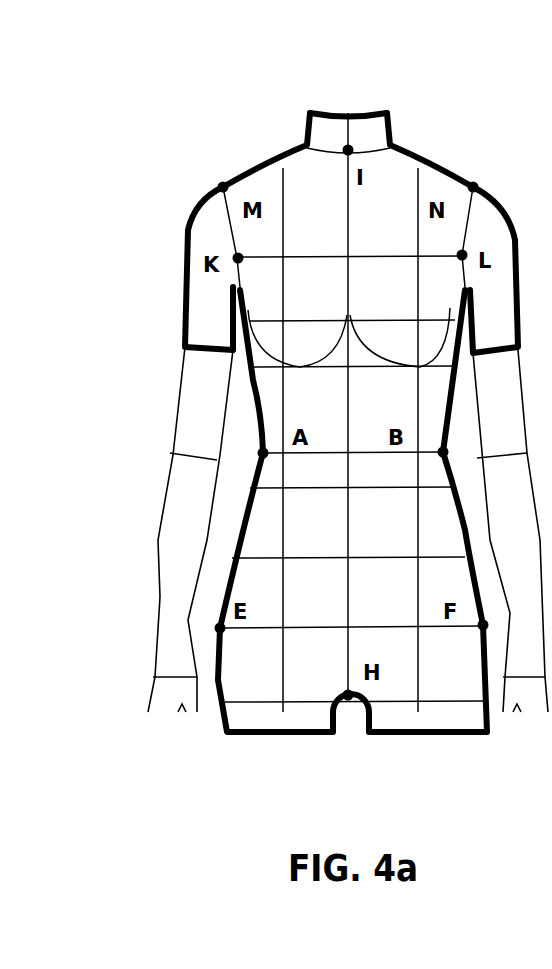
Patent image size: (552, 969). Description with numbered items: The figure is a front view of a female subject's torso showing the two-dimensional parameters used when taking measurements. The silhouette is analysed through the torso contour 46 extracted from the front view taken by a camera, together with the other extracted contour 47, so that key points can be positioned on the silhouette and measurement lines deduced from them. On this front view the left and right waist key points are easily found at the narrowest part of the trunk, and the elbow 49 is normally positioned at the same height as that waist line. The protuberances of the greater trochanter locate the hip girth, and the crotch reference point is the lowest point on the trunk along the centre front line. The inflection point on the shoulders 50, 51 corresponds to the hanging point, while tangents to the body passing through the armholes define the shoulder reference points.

The contour 46 is at (263, 170).
The elbow 49 is at (170, 453).
The shoulder 50 is at (205, 237).
The shoulder 51 is at (485, 215).
The contour 47 is at (545, 109).